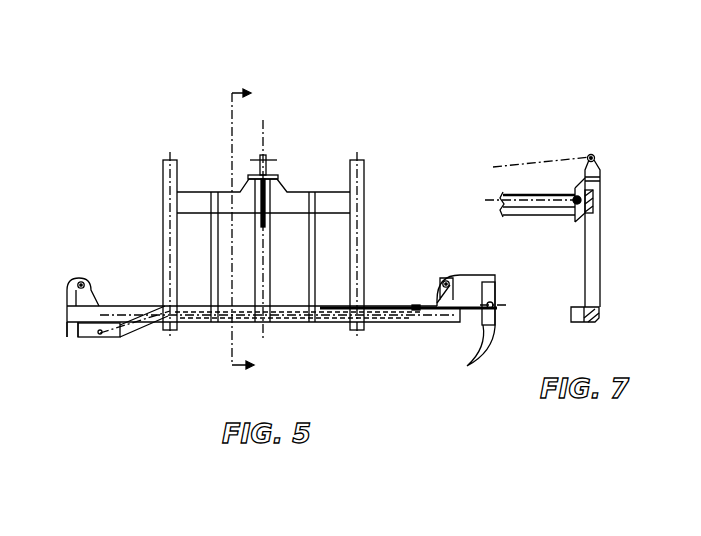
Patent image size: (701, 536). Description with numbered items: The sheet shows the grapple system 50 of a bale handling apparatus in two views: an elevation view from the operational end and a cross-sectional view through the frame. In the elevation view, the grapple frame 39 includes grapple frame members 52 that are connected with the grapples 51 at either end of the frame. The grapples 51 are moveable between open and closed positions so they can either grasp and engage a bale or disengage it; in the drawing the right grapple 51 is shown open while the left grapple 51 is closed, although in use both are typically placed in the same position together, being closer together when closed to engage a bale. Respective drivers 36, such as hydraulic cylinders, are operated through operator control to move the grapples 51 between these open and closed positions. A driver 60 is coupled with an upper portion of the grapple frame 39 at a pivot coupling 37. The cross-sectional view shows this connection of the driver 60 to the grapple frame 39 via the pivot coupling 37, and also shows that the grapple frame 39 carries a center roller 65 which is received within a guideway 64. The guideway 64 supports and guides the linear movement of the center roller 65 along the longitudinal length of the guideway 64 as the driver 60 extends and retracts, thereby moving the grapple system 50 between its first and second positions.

In FIG. 5, the grapple system 50 is at (197, 146).
In FIG. 5, the grapple frame 39 is at (158, 196).
In FIG. 7, the grapple frame 39 is at (606, 275).
In FIG. 5, the grapple frame members 52 is at (170, 255).
In FIG. 5, the pivot coupling 37 is at (266, 157).
In FIG. 7, the pivot coupling 37 is at (588, 155).
In FIG. 5, the drivers 36 is at (148, 328).
In FIG. 5, the grapples 51 is at (78, 337).
In FIG. 7, the driver 60 is at (536, 162).
In FIG. 7, the guideway 64 is at (518, 197).
In FIG. 7, the center roller 65 is at (575, 206).